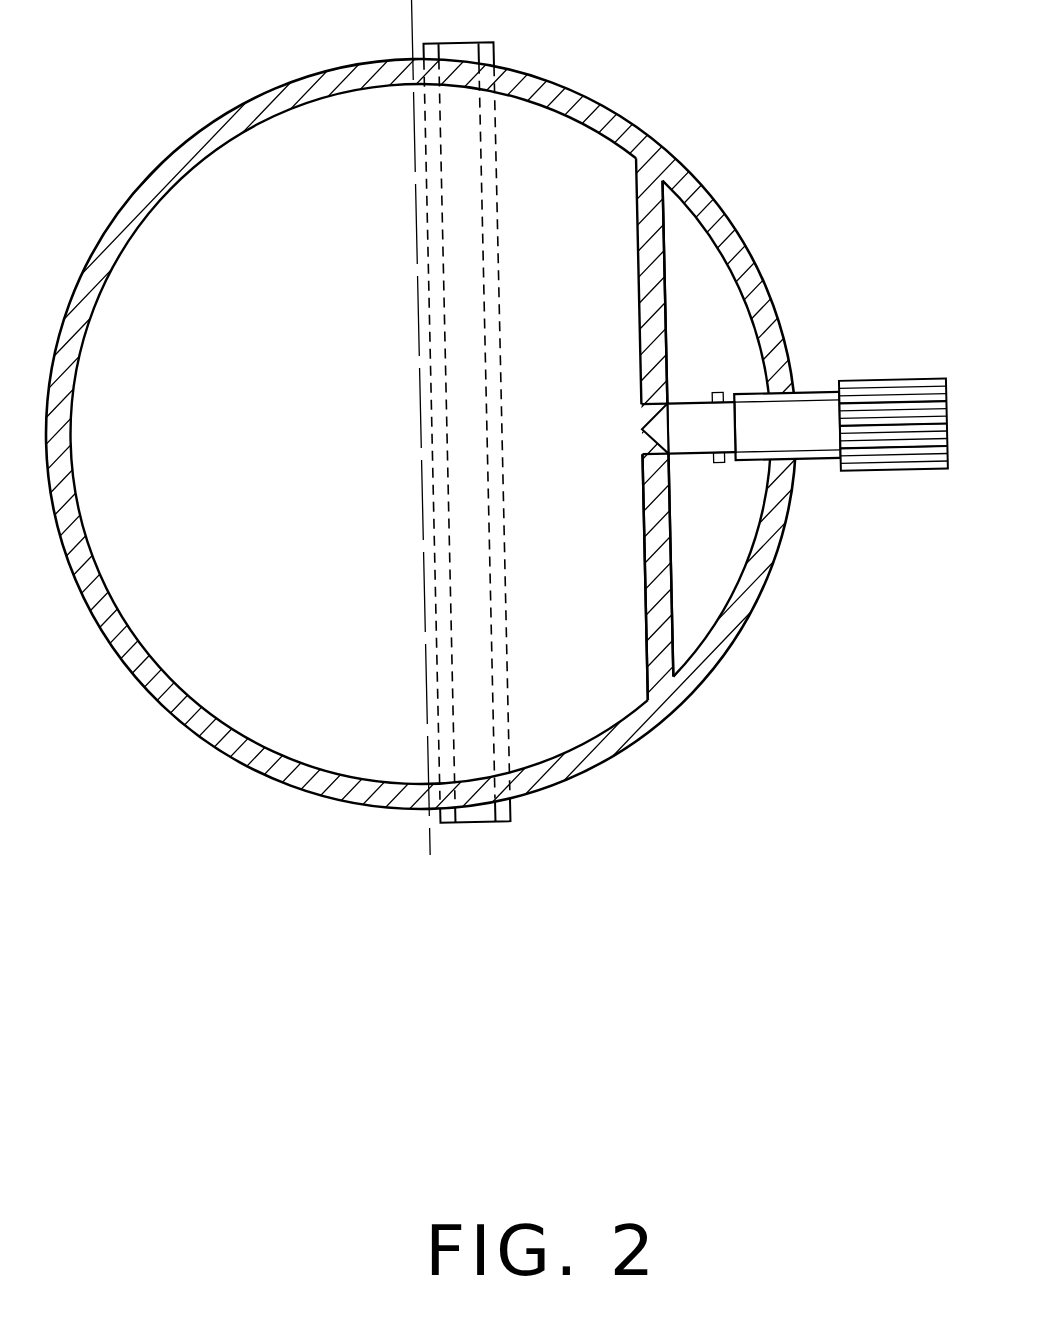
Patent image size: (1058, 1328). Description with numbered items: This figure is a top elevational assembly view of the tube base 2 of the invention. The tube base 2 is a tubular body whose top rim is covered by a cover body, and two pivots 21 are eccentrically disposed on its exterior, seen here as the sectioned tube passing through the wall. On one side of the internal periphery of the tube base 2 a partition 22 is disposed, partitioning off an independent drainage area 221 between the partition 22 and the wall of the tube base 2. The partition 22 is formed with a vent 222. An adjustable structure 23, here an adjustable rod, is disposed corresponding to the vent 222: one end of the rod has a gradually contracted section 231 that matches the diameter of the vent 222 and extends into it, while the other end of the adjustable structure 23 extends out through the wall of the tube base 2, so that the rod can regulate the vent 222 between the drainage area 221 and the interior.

The tube base 2 is at (745, 282).
The pivots 21 is at (480, 818).
The partition 22 is at (652, 272).
The drainage area 221 is at (740, 362).
The vent 222 is at (650, 447).
The adjustable structure 23 is at (895, 447).
The gradually contracted section 231 is at (665, 438).